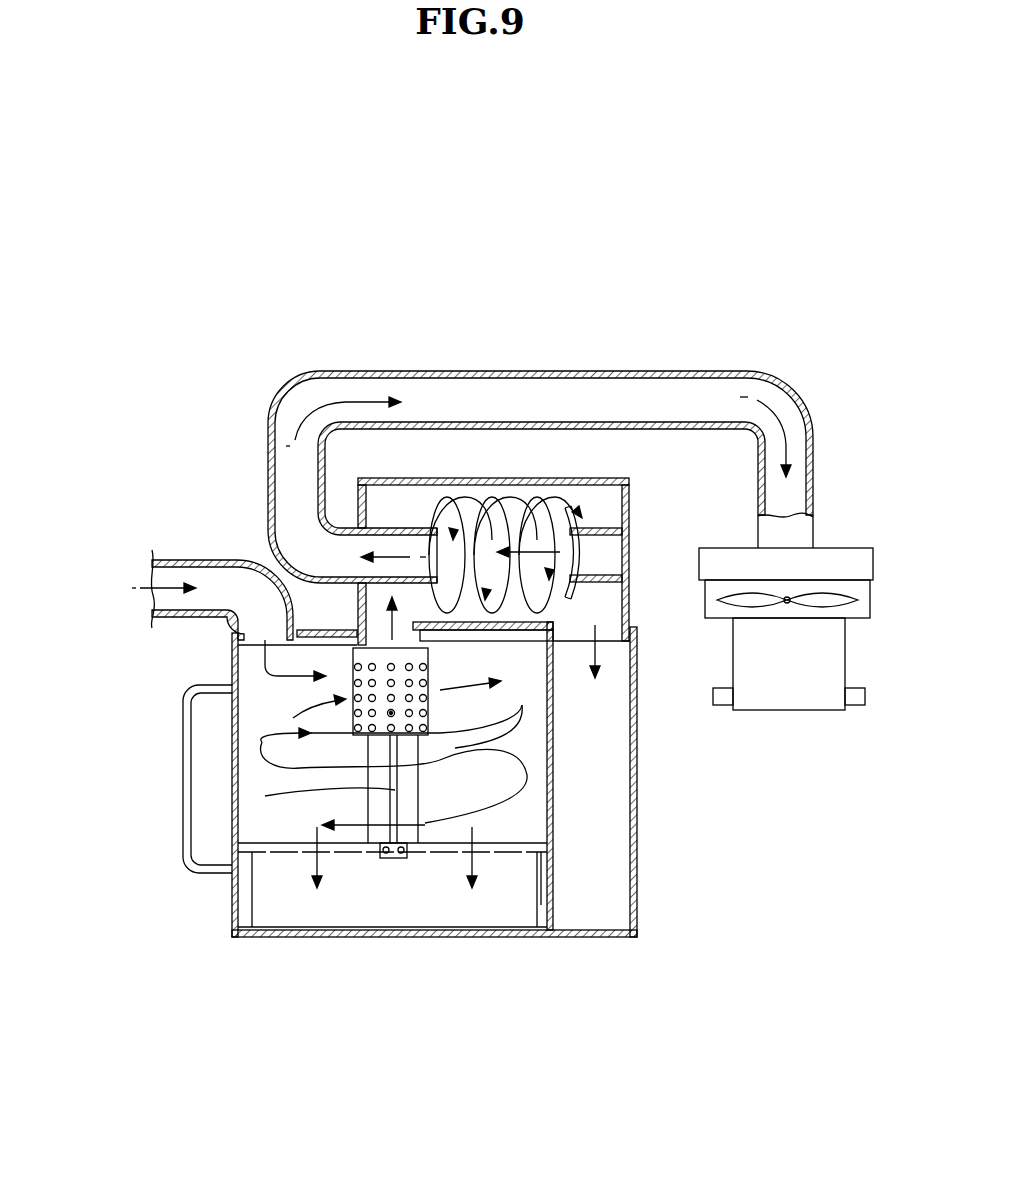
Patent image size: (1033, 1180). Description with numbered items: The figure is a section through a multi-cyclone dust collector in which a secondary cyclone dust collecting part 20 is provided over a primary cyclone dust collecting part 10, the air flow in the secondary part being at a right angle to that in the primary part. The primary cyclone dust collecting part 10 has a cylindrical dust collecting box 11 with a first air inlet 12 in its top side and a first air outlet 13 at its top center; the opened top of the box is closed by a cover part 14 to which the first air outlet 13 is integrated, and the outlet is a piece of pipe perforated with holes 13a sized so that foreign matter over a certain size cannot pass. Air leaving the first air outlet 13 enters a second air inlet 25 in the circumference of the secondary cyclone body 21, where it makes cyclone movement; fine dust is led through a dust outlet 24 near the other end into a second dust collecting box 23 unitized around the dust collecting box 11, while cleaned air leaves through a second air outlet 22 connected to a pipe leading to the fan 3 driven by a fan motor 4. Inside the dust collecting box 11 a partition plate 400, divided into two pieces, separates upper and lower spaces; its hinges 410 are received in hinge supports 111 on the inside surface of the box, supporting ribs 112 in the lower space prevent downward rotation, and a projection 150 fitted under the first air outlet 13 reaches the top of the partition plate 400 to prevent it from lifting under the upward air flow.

The fan 3 is at (868, 599).
The fan motor 4 is at (822, 657).
The primary cyclone dust collecting part 10 is at (88, 612).
The dust collecting box 11 is at (232, 795).
The first air inlet 12 is at (160, 598).
The first air outlet 13 is at (357, 693).
The holes 13a is at (391, 714).
The cover part 14 is at (232, 638).
The secondary cyclone dust collecting part 20 is at (722, 292).
The secondary cyclone body 21 is at (545, 480).
The second air outlet 22 is at (268, 481).
The second dust collecting box 23 is at (640, 655).
The dust outlet 24 is at (608, 633).
The second air inlet 25 is at (402, 640).
The hinge supports 111 is at (403, 860).
The supporting ribs 112 is at (537, 905).
The projection 150 is at (373, 807).
The partition plate 400 is at (195, 861).
The hinges 410 is at (382, 860).